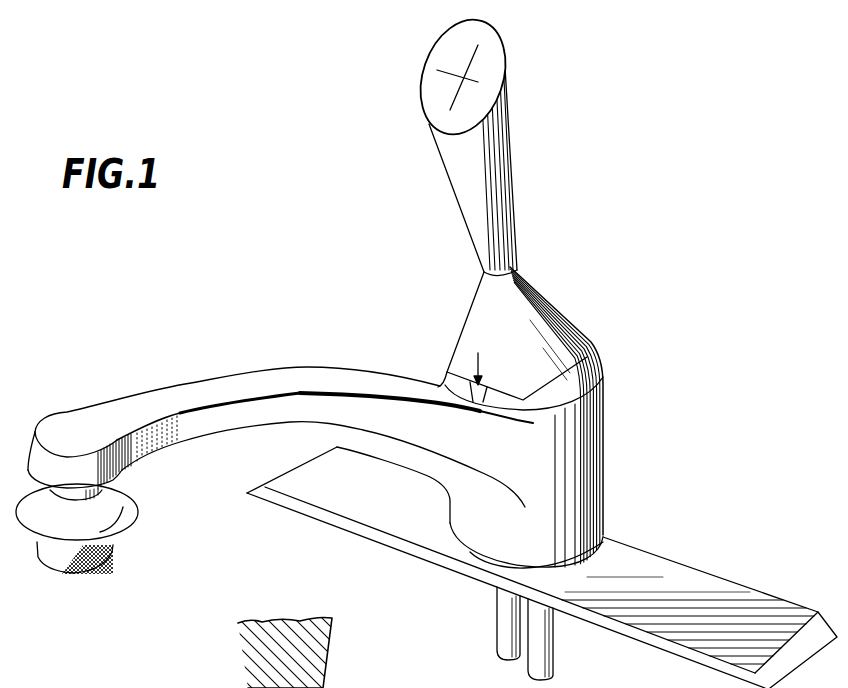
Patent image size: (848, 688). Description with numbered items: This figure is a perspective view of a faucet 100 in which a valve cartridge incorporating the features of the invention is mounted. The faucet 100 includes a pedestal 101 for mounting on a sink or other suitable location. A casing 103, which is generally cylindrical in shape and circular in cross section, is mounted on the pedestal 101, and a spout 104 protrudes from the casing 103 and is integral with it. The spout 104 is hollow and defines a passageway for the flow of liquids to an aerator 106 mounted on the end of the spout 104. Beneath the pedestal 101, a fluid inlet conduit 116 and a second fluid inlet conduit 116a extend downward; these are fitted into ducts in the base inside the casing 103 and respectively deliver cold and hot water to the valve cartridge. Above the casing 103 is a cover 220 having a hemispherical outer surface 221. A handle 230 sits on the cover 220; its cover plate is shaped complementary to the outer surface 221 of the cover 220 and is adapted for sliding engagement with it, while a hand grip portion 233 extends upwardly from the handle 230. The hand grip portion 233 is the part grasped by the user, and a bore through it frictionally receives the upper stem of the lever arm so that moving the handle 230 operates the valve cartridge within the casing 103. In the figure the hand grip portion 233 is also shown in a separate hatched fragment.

The faucet 100 is at (677, 283).
The pedestal 101 is at (502, 562).
The casing 103 is at (607, 467).
The spout 104 is at (220, 380).
The aerator 106 is at (114, 553).
The fluid inlet conduit 116 is at (505, 637).
The second fluid inlet conduit 116a is at (550, 667).
The cover 220 is at (598, 353).
The hemispherical outer surface 221 is at (592, 377).
The handle 230 is at (563, 307).
The hand grip portion 233 is at (445, 170).